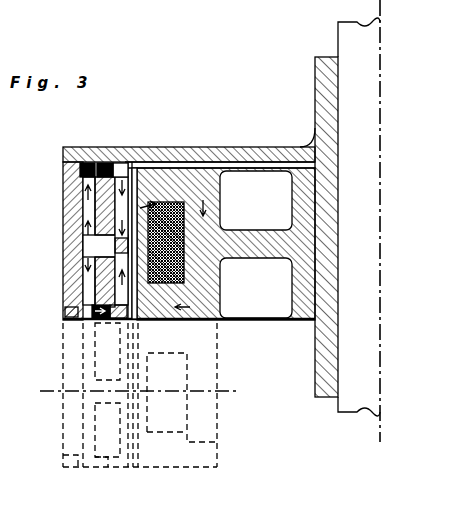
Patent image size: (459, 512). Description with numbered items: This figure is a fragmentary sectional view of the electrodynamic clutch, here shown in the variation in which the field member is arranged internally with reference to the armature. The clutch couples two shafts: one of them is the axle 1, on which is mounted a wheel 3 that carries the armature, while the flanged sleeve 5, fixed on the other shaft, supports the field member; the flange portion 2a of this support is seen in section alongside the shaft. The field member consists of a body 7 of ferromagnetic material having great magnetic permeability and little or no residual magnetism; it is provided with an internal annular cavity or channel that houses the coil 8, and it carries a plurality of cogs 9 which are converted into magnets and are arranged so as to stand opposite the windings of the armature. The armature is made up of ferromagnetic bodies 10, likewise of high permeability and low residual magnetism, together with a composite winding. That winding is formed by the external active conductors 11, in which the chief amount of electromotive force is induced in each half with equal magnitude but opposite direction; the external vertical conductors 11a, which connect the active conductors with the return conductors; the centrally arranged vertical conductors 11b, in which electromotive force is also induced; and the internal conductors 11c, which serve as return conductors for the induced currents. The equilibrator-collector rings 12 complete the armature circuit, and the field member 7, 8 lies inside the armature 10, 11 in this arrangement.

The axle 1 is at (343, 413).
The flange of housing 2a is at (318, 365).
The wheel 3 is at (255, 250).
The flanged sleeve 5 is at (305, 138).
The field member body 7 is at (222, 160).
The coil 8 is at (170, 206).
The cogs 9 is at (134, 195).
The armature body 10 is at (105, 172).
The external active conductors 11 is at (125, 185).
The external vertical conductors 11a is at (118, 170).
The centrally arranged vertical conductors 11b is at (86, 200).
The internal conductors 11c is at (88, 244).
The equilibrator-collector rings 12 is at (88, 165).